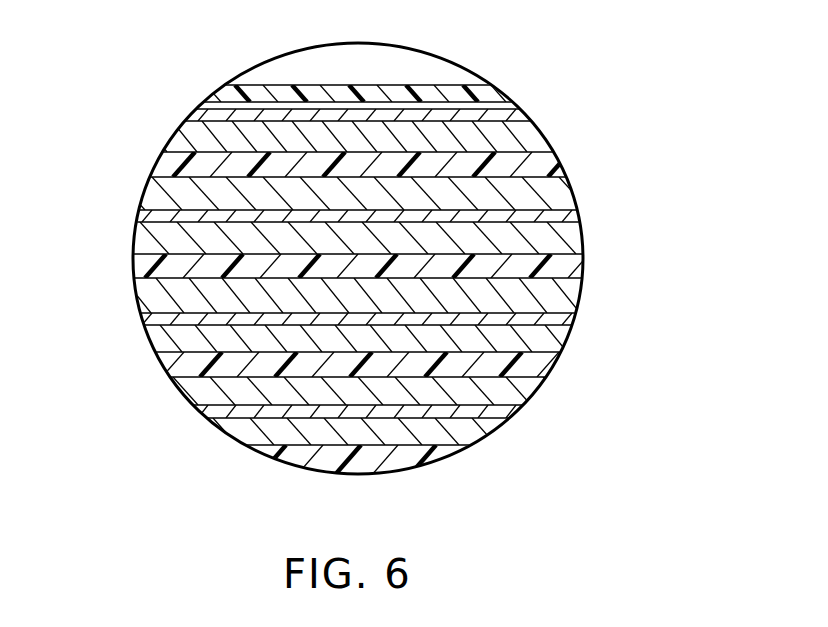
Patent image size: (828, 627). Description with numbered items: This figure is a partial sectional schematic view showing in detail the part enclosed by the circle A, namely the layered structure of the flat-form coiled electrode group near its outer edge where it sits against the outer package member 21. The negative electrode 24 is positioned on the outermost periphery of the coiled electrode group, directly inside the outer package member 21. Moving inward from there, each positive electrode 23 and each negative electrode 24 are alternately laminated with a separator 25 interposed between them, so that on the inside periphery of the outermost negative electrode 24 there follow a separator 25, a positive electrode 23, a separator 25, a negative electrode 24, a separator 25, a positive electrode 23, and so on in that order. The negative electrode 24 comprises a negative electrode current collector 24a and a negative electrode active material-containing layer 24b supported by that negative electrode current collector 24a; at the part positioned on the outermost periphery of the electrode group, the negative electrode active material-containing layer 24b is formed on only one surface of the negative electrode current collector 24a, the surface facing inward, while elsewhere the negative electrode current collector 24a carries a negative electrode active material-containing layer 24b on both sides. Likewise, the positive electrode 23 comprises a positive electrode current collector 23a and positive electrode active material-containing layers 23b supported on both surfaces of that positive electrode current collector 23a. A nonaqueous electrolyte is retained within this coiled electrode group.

The circle-enclosed part A is at (262, 82).
The outer package member 21 is at (493, 95).
The positive electrode 23 is at (410, 332).
The positive electrode current collector 23a is at (557, 218).
The positive electrode active material-containing layer 23b is at (547, 202).
The negative electrode 24 is at (410, 227).
The negative electrode current collector 24a is at (517, 117).
The negative electrode active material-containing layer 24b is at (518, 140).
The separator 25 is at (175, 165).